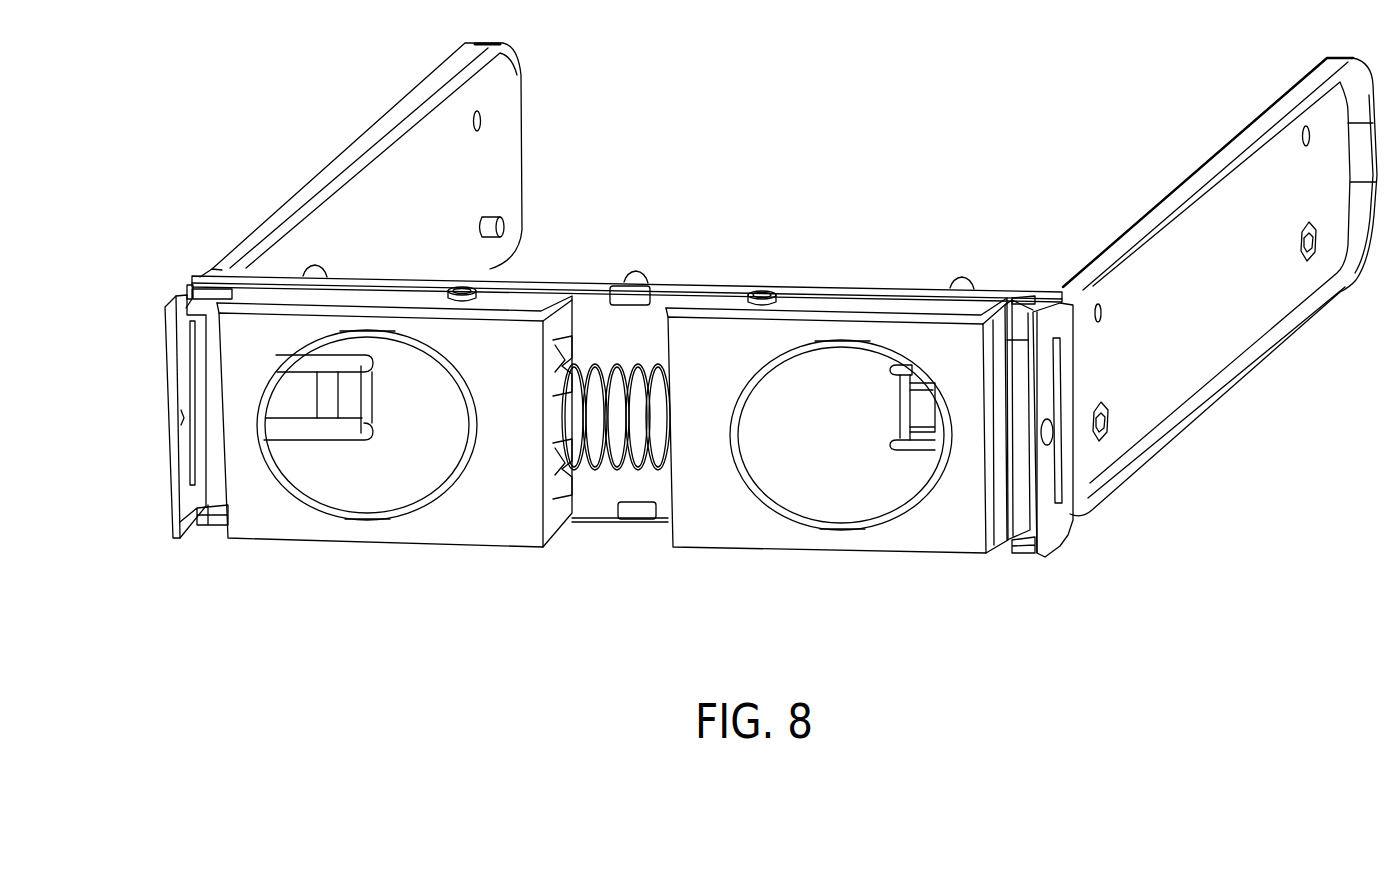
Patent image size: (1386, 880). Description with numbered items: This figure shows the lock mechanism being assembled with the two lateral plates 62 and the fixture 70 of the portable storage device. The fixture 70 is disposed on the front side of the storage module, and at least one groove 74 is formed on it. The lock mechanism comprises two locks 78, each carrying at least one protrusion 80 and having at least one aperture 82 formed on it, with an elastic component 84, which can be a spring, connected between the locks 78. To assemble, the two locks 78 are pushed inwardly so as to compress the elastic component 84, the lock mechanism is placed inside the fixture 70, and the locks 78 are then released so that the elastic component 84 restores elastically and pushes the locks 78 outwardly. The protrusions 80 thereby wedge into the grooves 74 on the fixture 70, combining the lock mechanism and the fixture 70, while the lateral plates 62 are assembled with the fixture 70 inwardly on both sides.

The lateral plate 62 is at (537, 75).
The fixture 70 is at (578, 266).
The groove 74 is at (188, 283).
The lock 78 is at (502, 523).
The protrusion 80 is at (213, 289).
The aperture 82 is at (370, 490).
The elastic component 84 is at (637, 365).